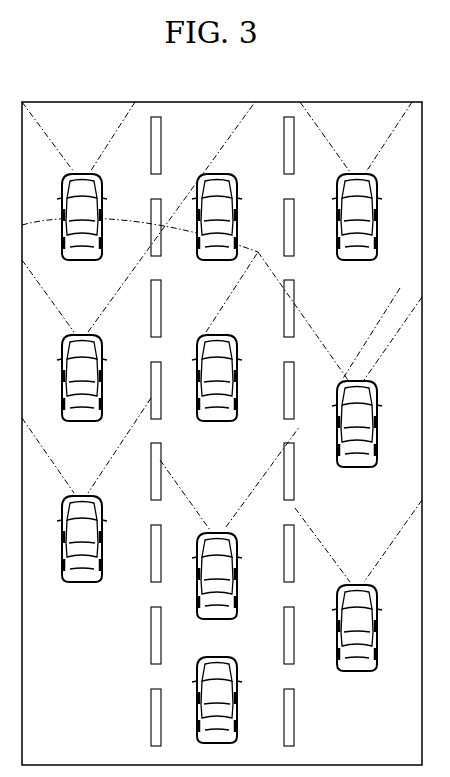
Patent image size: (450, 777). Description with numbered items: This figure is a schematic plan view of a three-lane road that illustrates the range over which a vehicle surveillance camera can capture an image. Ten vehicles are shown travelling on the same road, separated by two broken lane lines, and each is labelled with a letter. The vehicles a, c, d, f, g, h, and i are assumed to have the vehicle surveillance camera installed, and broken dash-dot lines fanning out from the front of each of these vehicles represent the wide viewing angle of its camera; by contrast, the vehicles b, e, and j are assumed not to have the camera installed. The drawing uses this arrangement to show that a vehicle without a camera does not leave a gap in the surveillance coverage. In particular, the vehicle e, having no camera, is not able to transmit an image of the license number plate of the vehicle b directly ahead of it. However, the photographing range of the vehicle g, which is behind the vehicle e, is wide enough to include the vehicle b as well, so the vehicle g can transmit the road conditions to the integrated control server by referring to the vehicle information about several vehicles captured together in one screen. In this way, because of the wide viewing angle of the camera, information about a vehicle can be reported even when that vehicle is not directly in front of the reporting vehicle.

The vehicle a is at (103, 186).
The vehicle b is at (238, 186).
The vehicle c is at (378, 186).
The vehicle d is at (103, 347).
The vehicle e is at (238, 347).
The vehicle f is at (378, 393).
The vehicle g is at (103, 508).
The vehicle h is at (238, 545).
The vehicle i is at (378, 597).
The vehicle j is at (238, 669).